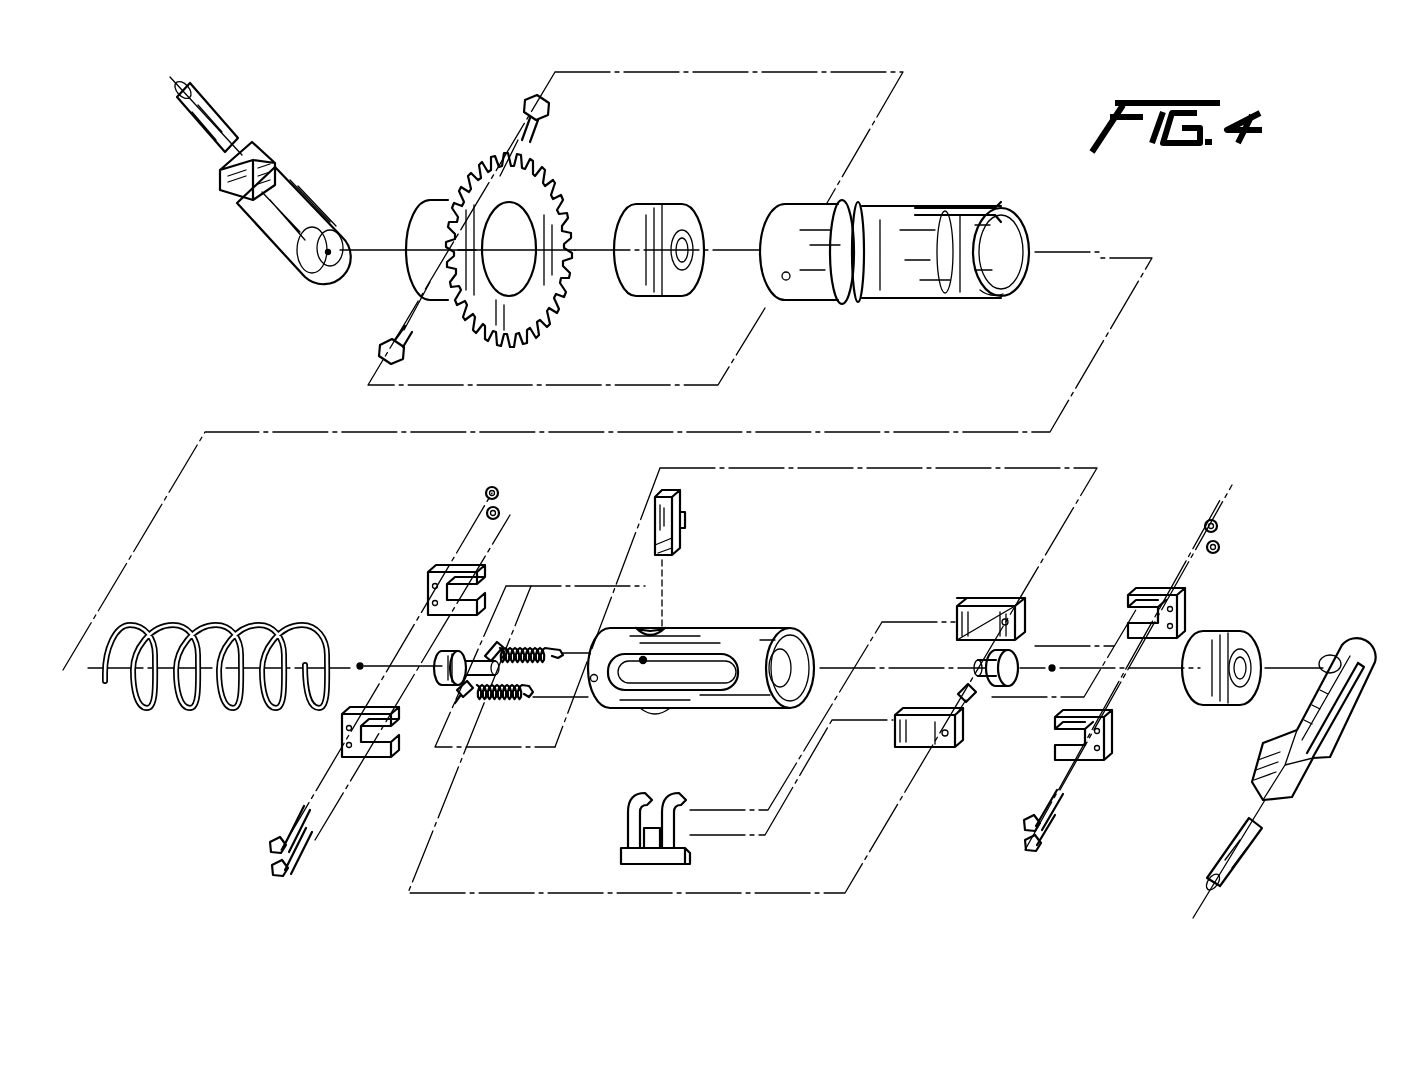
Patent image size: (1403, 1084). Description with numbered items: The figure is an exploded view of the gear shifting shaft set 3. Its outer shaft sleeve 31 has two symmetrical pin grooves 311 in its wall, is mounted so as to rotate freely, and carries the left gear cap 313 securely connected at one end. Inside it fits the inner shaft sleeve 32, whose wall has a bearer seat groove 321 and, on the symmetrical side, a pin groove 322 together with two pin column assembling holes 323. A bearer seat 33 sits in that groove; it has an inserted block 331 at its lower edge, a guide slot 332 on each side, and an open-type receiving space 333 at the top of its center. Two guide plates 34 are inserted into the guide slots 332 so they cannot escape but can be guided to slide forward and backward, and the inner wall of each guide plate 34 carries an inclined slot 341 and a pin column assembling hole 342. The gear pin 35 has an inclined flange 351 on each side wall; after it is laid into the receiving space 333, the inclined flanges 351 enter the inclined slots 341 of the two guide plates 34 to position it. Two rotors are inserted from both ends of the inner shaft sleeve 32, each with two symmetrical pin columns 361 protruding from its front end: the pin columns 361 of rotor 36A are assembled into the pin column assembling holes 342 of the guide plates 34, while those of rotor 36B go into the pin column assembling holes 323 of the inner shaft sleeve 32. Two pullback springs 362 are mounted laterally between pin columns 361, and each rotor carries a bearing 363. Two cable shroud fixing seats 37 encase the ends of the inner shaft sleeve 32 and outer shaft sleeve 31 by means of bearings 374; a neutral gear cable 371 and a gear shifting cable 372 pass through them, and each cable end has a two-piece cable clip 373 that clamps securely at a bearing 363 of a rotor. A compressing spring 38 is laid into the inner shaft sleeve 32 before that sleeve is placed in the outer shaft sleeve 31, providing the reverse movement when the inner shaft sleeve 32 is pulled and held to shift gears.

The gear shifting shaft set 3 is at (1246, 392).
The outer shaft sleeve 31 is at (929, 240).
The pin grooves 311 is at (975, 207).
The left gear cap 313 is at (569, 185).
The inner shaft sleeve 32 is at (697, 640).
The bearer seat groove 321 is at (668, 710).
The pin groove 322 is at (668, 628).
The pin column assembling holes 323 is at (643, 658).
The bearer seat 33 is at (653, 852).
The inserted block 331 is at (680, 860).
The guide slot 332 is at (622, 845).
The open-type receiving space 333 is at (655, 795).
The guide plates 34 is at (955, 676).
The inclined slot 341 is at (957, 628).
The pin column assembling hole 342 is at (1008, 615).
The gear pin 35 is at (712, 553).
The inclined flange 351 is at (684, 538).
The rotor 36A is at (1015, 660).
The rotor 36B is at (695, 672).
The pin columns 361 is at (462, 698).
The pullback springs 362 is at (556, 648).
The bearing 363 is at (440, 668).
The cable shroud fixing seats 37 is at (262, 232).
The neutral gear cable 371 is at (1190, 672).
The gear shifting cable 372 is at (222, 108).
The cable clip 373 is at (452, 570).
The bearing 374 is at (676, 205).
The compressing spring 38 is at (300, 632).